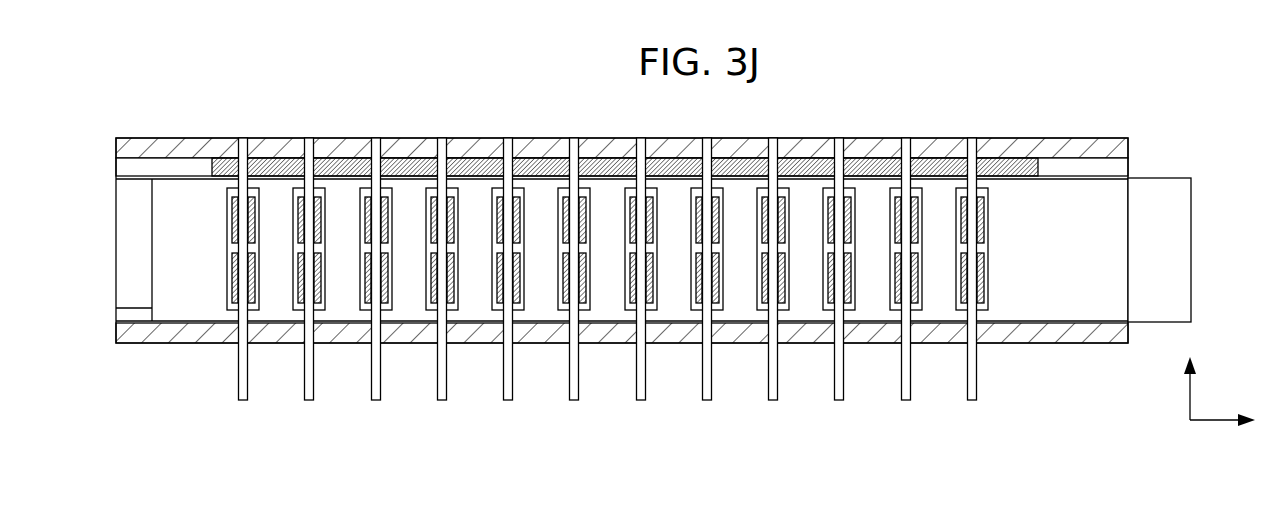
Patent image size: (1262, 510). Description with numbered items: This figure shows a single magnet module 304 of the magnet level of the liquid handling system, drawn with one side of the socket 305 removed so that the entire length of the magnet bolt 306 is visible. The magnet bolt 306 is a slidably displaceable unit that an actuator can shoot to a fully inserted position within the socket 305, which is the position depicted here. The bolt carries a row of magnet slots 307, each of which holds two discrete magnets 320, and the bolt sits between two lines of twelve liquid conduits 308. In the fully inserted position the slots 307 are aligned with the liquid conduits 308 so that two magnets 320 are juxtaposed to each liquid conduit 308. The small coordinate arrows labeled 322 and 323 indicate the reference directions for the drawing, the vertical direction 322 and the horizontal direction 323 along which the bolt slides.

The magnet module 304 is at (141, 139).
The socket 305 is at (1043, 137).
The magnet bolt 306 is at (1153, 184).
The magnet slot 307 is at (228, 252).
The liquid conduit 308 is at (906, 137).
The magnet 320 is at (228, 218).
The vertical axis 322 is at (1188, 412).
The horizontal axis 323 is at (1217, 425).